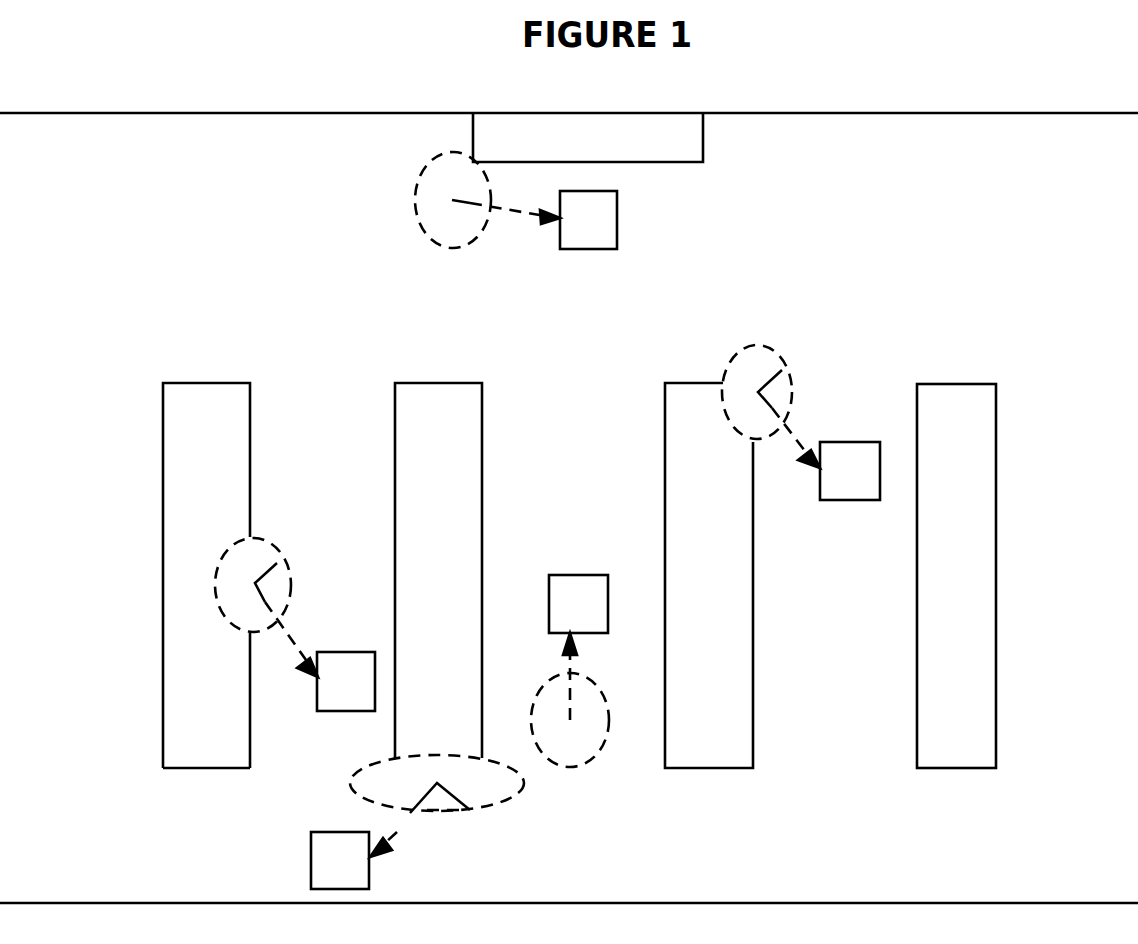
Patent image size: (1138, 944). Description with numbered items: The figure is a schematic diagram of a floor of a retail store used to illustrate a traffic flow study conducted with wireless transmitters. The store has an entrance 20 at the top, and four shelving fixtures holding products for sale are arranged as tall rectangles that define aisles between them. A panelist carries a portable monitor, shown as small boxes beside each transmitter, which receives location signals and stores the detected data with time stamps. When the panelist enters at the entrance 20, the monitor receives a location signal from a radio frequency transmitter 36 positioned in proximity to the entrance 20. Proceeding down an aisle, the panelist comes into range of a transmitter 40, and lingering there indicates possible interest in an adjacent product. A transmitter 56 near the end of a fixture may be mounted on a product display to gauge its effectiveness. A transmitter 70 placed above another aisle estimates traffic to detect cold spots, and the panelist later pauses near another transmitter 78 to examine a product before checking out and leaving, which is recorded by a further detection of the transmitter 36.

The entrance 20 is at (660, 162).
The radio frequency transmitter 36 is at (452, 200).
The transmitter 40 is at (277, 563).
The transmitter 56 is at (467, 795).
The transmitter 70 is at (570, 720).
The transmitter 78 is at (782, 370).